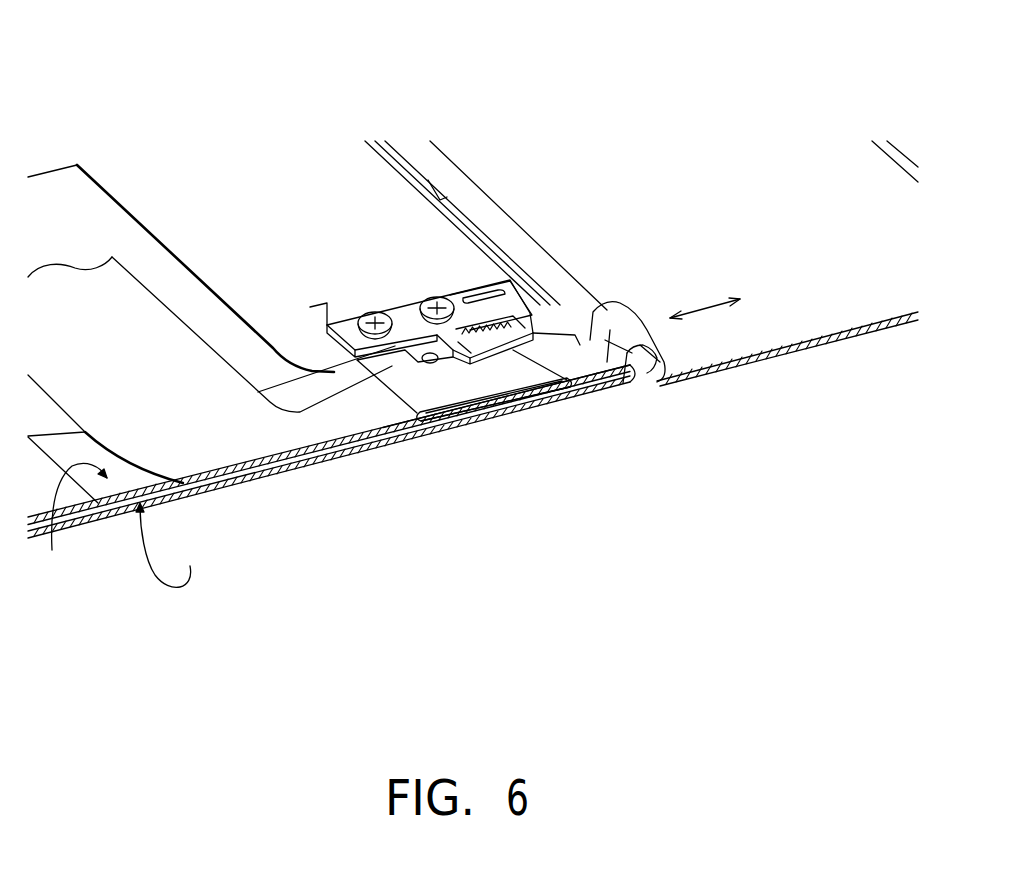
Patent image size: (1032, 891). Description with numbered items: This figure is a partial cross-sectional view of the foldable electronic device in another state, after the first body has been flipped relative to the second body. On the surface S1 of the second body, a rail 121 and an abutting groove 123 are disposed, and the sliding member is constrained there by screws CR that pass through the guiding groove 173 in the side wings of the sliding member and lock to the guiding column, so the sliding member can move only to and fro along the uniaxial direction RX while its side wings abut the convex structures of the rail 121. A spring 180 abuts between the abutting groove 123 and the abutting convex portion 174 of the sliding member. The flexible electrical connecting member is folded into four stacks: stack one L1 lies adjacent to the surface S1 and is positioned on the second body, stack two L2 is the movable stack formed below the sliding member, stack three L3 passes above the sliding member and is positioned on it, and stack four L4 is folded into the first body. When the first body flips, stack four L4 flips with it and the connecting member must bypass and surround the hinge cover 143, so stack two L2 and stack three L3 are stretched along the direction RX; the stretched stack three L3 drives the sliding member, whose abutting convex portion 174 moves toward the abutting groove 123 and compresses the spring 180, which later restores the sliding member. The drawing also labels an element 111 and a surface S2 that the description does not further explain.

The first body 111 is at (702, 158).
The rail 121 is at (330, 322).
The abutting groove 123 is at (572, 307).
The hinge cover 143 is at (649, 378).
The guiding groove 173 is at (468, 302).
The abutting convex portion 174 is at (392, 365).
The spring 180 is at (503, 320).
The screws CR is at (428, 298).
The stack one L1 is at (122, 303).
The stack two L2 is at (507, 398).
The stack three L3 is at (410, 398).
The stack four L4 is at (768, 362).
The uniaxial direction RX is at (705, 295).
The surface S1 is at (75, 524).
The second surface S2 is at (172, 545).